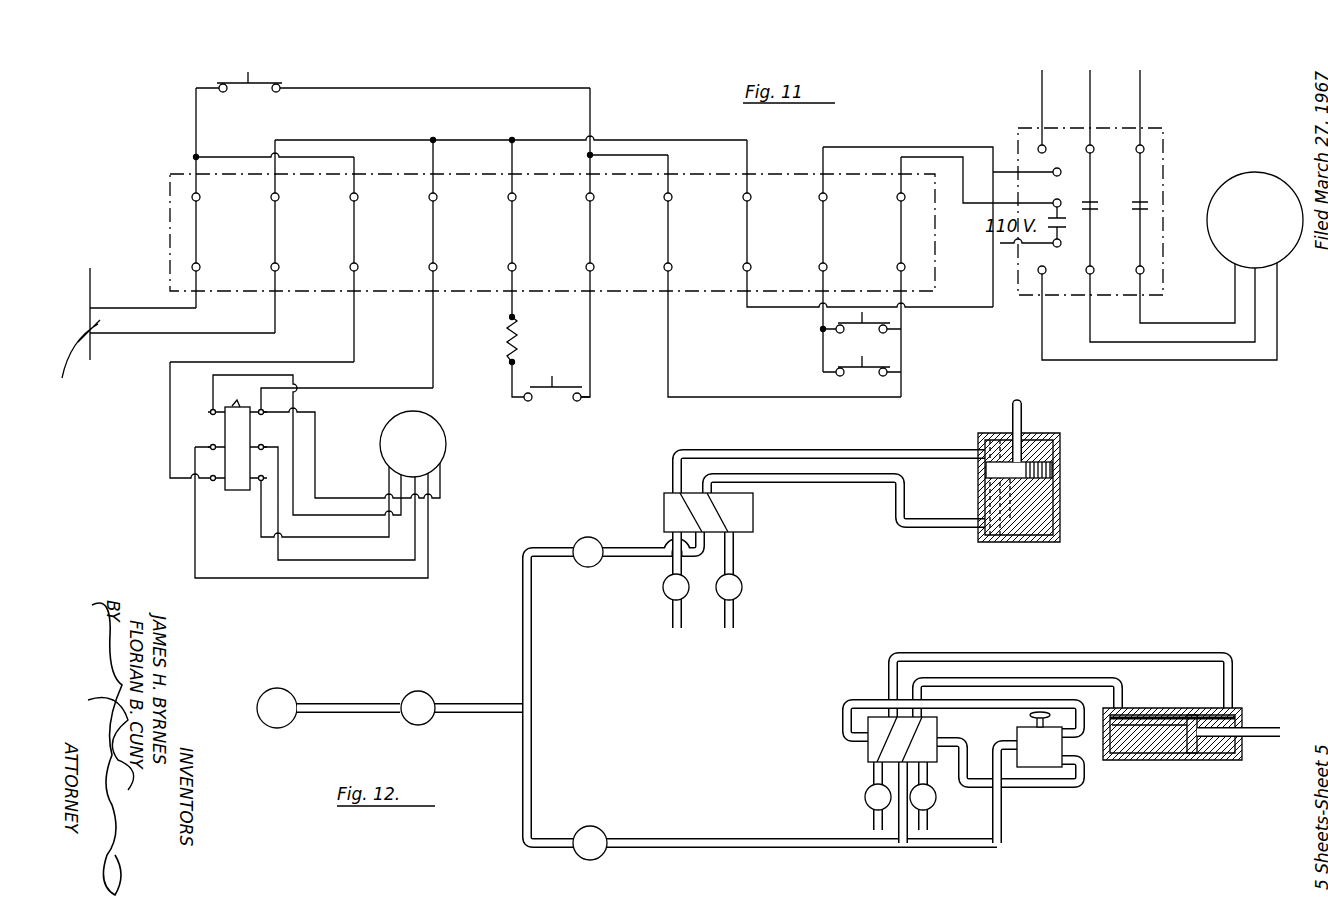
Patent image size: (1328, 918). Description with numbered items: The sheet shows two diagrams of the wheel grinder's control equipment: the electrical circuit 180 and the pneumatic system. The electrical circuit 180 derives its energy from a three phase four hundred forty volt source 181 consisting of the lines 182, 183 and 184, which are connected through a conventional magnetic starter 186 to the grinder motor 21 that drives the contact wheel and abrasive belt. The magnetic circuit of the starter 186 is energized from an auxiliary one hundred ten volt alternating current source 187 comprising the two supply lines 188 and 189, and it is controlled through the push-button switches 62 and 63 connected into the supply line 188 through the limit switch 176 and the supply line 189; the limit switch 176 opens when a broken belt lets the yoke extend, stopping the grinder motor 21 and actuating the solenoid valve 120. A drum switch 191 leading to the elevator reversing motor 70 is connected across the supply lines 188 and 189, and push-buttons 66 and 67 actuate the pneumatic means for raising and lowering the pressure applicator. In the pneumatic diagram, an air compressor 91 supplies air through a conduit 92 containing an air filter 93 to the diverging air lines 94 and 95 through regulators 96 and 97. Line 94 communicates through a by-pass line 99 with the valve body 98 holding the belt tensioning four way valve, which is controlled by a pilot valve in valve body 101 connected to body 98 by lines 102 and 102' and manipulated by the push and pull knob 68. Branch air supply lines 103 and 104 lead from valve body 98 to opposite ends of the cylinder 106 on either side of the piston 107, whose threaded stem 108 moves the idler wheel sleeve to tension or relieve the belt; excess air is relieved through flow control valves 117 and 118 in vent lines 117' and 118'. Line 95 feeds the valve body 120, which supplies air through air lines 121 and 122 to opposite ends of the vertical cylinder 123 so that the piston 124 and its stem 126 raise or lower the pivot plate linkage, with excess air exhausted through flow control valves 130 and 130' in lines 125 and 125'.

In FIG. 11, the limit switch 176 is at (280, 82).
In FIG. 11, the 110-volt alternating current source 187 is at (86, 288).
In FIG. 11, the supply line 188 is at (104, 308).
In FIG. 11, the supply line 189 is at (104, 333).
In FIG. 11, the valve body 120 is at (518, 336).
In FIG. 12, the valve body 120 is at (753, 516).
In FIG. 11, the push-button 66 is at (566, 386).
In FIG. 11, the electrical circuit 180 is at (575, 403).
In FIG. 11, the push-button 67 is at (232, 404).
In FIG. 11, the drum switch 191 is at (236, 492).
In FIG. 11, the reversing motor 70 is at (441, 426).
In FIG. 11, the push-button 62 is at (884, 333).
In FIG. 11, the push-button 63 is at (884, 376).
In FIG. 11, the 440 volt three phase distribution system 181 is at (1146, 66).
In FIG. 11, the line 182 is at (1042, 112).
In FIG. 11, the line 183 is at (1090, 118).
In FIG. 11, the line 184 is at (1140, 118).
In FIG. 11, the magnetic starter 186 is at (1168, 133).
In FIG. 11, the grinder motor 21 is at (1250, 173).
In FIG. 12, the air compressor 91 is at (262, 705).
In FIG. 12, the conduit 92 is at (345, 730).
In FIG. 12, the air filter 93 is at (423, 723).
In FIG. 12, the air line 94 is at (535, 763).
In FIG. 12, the air line 95 is at (532, 624).
In FIG. 12, the regulator 96 is at (600, 852).
In FIG. 12, the regulator 97 is at (588, 548).
In FIG. 12, the valve body 98 is at (868, 748).
In FIG. 12, the by-pass line 99 is at (915, 846).
In FIG. 12, the valve body 101 is at (1067, 757).
In FIG. 12, the line 102 is at (1012, 781).
In FIG. 12, the line 102' is at (1012, 681).
In FIG. 12, the branch air supply line 103 is at (985, 655).
In FIG. 12, the branch air supply line 104 is at (1042, 677).
In FIG. 12, the cylinder 106 is at (1130, 708).
In FIG. 12, the piston 107 is at (1192, 751).
In FIG. 12, the threaded stem 108 is at (1240, 732).
In FIG. 12, the push and pull valve 68 is at (1030, 715).
In FIG. 12, the flow control valve 117 is at (855, 807).
In FIG. 12, the vent line 117' is at (848, 796).
In FIG. 12, the flow control valve 118 is at (941, 812).
In FIG. 12, the vent line 118' is at (957, 796).
In FIG. 12, the air line 121 is at (812, 486).
In FIG. 12, the air line 122 is at (768, 453).
In FIG. 12, the cylinder 123 is at (1061, 522).
In FIG. 12, the piston 124 is at (1061, 478).
In FIG. 12, the line 125 is at (645, 588).
In FIG. 12, the line 125' is at (764, 582).
In FIG. 12, the stem 126 is at (1024, 416).
In FIG. 12, the flow control valve 130 is at (651, 595).
In FIG. 12, the flow control valve 130' is at (758, 587).